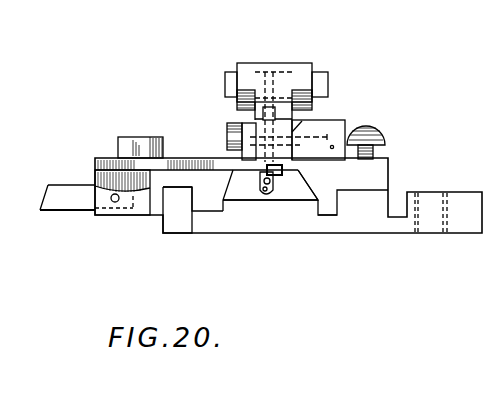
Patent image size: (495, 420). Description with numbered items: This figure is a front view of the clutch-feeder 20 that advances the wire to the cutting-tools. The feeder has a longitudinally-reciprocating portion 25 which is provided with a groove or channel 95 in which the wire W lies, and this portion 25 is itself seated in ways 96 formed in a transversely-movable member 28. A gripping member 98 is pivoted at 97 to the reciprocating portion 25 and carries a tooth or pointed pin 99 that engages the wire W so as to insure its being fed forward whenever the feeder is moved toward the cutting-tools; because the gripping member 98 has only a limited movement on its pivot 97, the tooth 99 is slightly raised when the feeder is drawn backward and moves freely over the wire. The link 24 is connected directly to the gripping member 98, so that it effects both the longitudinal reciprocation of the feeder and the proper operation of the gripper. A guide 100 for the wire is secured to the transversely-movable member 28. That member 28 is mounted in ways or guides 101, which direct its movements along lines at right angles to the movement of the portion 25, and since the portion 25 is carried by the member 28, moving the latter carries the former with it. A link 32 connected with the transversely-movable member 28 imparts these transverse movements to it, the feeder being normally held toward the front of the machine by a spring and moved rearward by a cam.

The clutch-feeder 20 is at (269, 271).
The link 24 is at (305, 72).
The longitudinally-reciprocating portion 25 is at (240, 195).
The transversely-movable member 28 is at (232, 177).
The link 32 is at (63, 197).
The groove 95 is at (280, 193).
The ways 96 is at (308, 188).
The pivot 97 is at (318, 130).
The gripping member 98 is at (253, 150).
The tooth 99 is at (278, 177).
The guide 100 is at (212, 158).
The ways 101 is at (170, 233).
The wire W is at (268, 193).